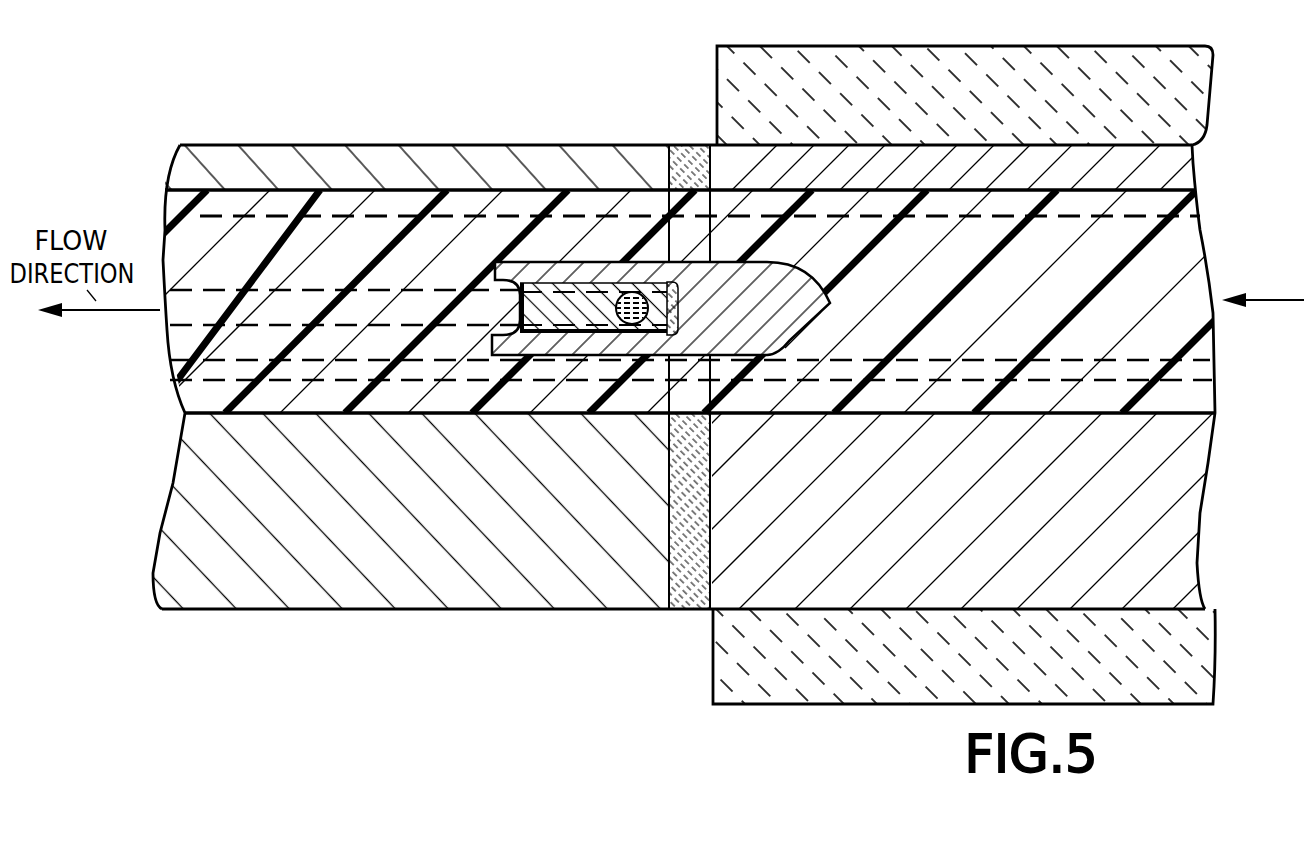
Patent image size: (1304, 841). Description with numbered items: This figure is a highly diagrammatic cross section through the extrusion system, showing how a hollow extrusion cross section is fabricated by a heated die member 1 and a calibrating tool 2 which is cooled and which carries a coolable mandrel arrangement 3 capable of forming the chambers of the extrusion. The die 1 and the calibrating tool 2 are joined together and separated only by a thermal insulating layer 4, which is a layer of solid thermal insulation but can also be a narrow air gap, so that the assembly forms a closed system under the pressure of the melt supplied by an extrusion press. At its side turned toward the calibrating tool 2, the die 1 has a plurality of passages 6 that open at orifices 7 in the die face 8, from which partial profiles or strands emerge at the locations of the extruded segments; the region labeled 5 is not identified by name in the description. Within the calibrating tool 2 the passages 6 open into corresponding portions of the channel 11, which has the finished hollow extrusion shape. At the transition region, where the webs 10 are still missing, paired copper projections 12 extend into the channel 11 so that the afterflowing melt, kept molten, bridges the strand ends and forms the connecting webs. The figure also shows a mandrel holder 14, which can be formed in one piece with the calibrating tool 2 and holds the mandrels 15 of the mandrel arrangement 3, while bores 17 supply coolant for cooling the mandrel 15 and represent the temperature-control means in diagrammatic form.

The heated die member 1 is at (697, 707).
The calibrating tool 2 is at (397, 575).
The coolable mandrel arrangement 3 is at (251, 380).
The thermal insulating layer 4 is at (683, 622).
The pipe section 5 is at (1183, 247).
The passages 6 is at (773, 243).
The orifices 7 is at (707, 240).
The die face 8 is at (705, 483).
The missing web portions 10 is at (430, 302).
The channel 11 is at (395, 350).
The paired projections 12 is at (582, 265).
The mandrel holder 14 is at (540, 300).
The mandrel 15 is at (224, 204).
The bores 17 is at (217, 330).